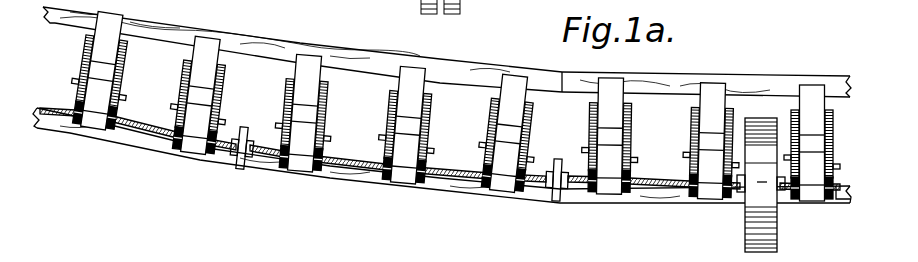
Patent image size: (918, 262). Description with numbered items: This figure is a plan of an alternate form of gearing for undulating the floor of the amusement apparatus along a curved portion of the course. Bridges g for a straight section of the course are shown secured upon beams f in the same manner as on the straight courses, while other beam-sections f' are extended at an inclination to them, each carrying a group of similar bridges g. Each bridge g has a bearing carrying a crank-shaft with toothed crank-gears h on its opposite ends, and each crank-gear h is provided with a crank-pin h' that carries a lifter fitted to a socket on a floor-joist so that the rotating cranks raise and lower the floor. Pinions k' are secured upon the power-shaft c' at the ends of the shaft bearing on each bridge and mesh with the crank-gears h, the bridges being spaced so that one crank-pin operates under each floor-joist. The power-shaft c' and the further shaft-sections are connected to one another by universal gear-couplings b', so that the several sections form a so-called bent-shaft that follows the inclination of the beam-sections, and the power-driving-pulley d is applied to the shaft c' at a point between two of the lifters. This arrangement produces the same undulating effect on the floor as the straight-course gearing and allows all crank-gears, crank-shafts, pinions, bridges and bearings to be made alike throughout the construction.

The beam f is at (442, 140).
The beam-section f' is at (302, 49).
The bridge g is at (93, 133).
The crank-gear h is at (454, 106).
The crank-pin h' is at (455, 125).
The pinion k' is at (453, 177).
The power-shaft c' is at (704, 207).
The gear-coupling b' is at (397, 189).
The power-driving-pulley d is at (778, 229).